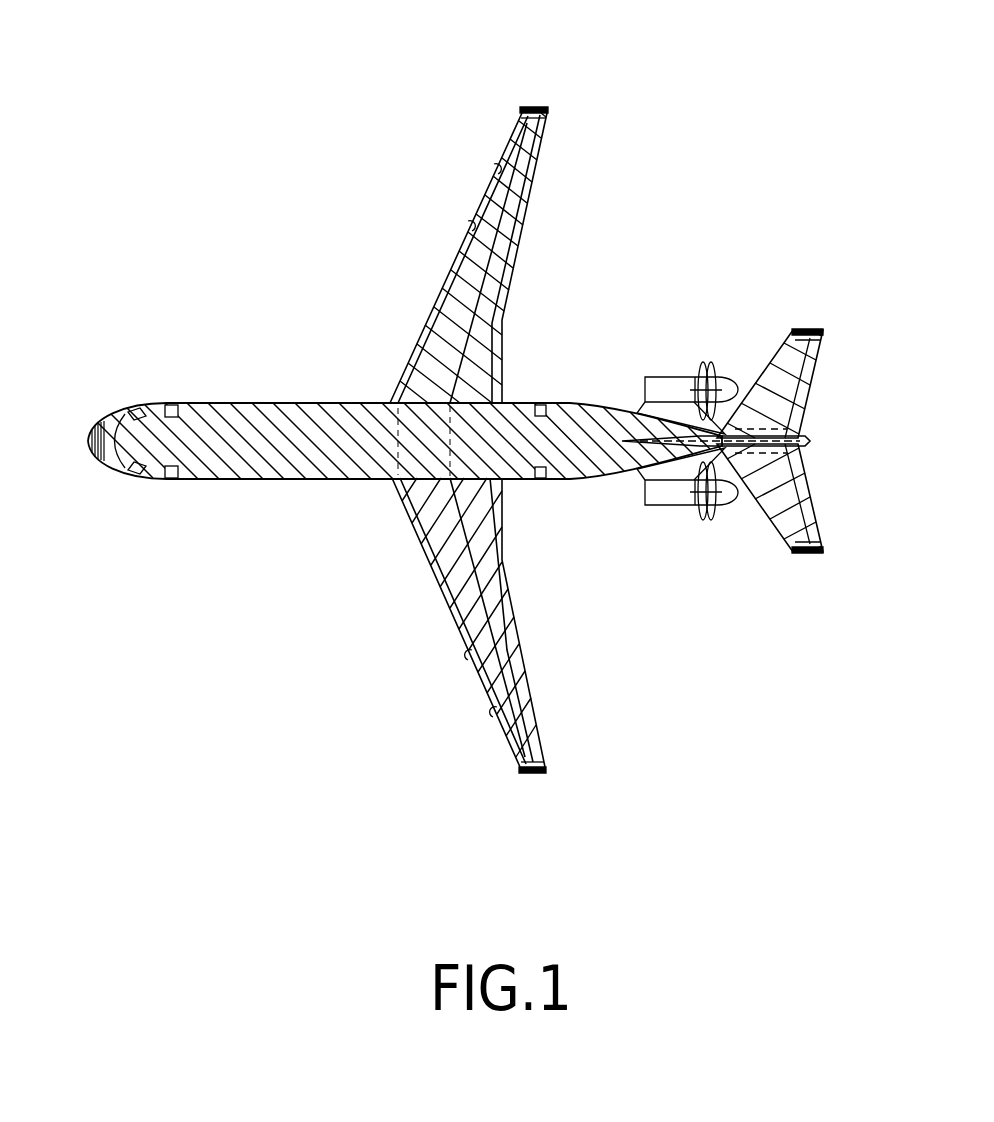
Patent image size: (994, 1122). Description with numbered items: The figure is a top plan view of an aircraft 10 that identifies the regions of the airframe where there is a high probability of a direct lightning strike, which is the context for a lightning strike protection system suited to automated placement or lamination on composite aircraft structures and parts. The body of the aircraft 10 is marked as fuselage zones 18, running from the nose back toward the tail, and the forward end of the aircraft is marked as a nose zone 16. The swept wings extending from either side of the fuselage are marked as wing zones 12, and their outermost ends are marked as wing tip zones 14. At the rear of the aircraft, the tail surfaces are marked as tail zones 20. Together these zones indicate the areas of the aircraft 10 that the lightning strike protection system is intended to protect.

The aircraft 10 is at (728, 110).
The wing zones 12 is at (477, 223).
The wing tip zones 14 is at (532, 107).
The nose zone 16 is at (92, 428).
The fuselage zones 18 is at (303, 427).
The tail zones 20 is at (795, 383).